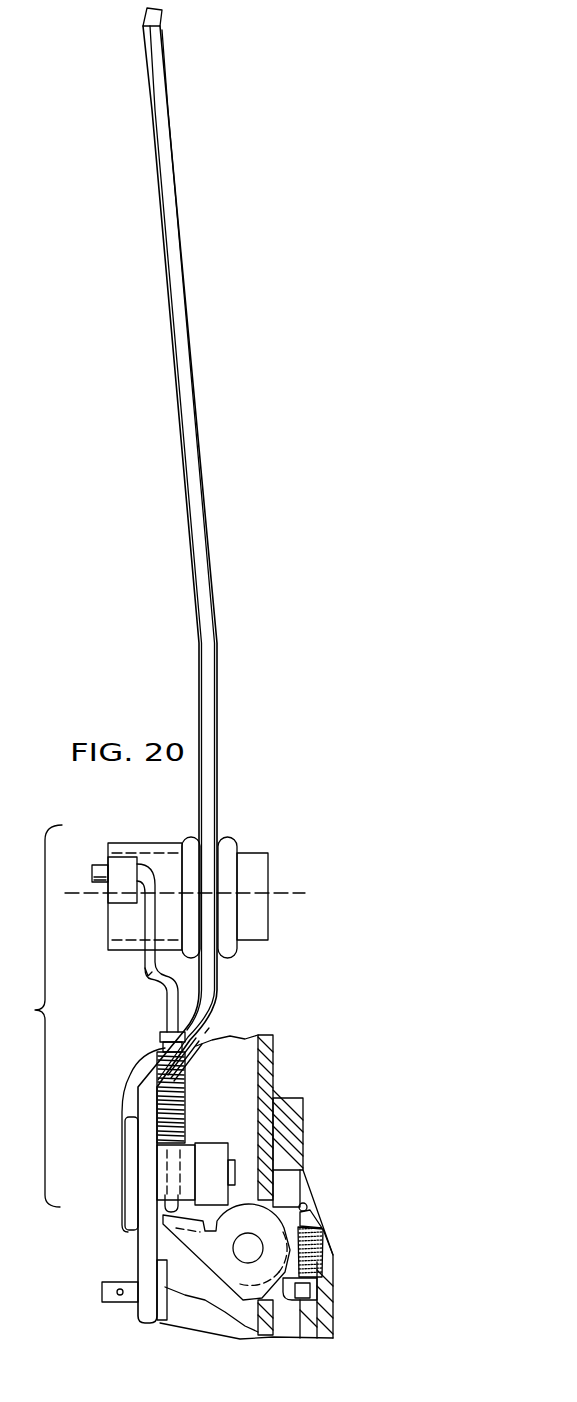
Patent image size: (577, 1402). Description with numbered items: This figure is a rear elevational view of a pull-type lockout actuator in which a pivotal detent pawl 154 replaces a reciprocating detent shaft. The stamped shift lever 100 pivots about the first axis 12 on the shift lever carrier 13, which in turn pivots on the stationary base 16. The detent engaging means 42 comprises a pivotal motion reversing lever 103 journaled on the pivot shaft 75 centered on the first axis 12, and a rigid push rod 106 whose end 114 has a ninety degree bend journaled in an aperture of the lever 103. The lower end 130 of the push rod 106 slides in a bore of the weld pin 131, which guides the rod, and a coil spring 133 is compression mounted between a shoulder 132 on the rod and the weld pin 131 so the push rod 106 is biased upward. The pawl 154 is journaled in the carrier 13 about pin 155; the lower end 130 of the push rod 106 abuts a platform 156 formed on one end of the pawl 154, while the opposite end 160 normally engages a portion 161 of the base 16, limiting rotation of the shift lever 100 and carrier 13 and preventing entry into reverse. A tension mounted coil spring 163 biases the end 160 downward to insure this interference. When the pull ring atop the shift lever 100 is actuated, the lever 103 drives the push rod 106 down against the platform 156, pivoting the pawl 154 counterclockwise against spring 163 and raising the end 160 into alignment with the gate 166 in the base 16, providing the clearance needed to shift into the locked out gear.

The stamped shift lever 100 is at (193, 352).
The pivotal motion reversing lever 103 is at (165, 856).
The end of the push rod 114 is at (97, 864).
The pivot shaft 75 is at (262, 862).
The first axis 12 is at (90, 897).
The detent engaging means 42 is at (35, 1016).
The push rod 106 is at (150, 990).
The shift lever carrier 13 is at (265, 1048).
The shoulder 132 is at (162, 1044).
The coil spring 133 is at (188, 1070).
The stationary base 16 is at (297, 1108).
The lower end of the push rod 130 is at (175, 1165).
The platform 156 is at (205, 1227).
The pin 155 is at (253, 1238).
The tension mounted coil spring 163 is at (322, 1232).
The opposite end of the pawl 160 is at (307, 1250).
The gate or window 166 is at (328, 1256).
The portion of the base 161 is at (327, 1281).
The weld pin 131 is at (128, 1216).
The pivotal detent pawl 154 is at (224, 1259).